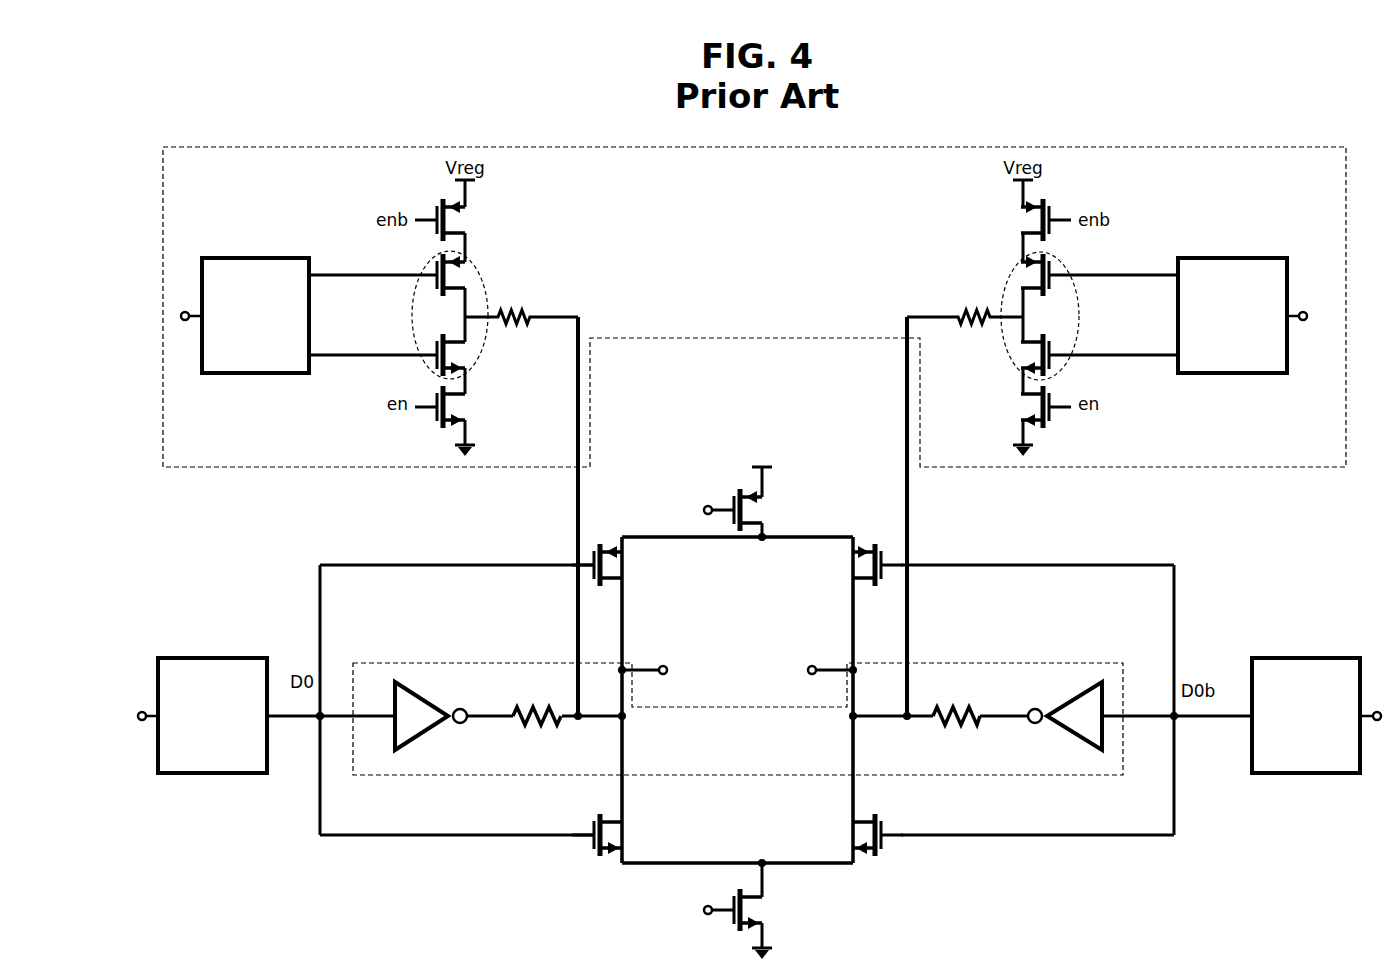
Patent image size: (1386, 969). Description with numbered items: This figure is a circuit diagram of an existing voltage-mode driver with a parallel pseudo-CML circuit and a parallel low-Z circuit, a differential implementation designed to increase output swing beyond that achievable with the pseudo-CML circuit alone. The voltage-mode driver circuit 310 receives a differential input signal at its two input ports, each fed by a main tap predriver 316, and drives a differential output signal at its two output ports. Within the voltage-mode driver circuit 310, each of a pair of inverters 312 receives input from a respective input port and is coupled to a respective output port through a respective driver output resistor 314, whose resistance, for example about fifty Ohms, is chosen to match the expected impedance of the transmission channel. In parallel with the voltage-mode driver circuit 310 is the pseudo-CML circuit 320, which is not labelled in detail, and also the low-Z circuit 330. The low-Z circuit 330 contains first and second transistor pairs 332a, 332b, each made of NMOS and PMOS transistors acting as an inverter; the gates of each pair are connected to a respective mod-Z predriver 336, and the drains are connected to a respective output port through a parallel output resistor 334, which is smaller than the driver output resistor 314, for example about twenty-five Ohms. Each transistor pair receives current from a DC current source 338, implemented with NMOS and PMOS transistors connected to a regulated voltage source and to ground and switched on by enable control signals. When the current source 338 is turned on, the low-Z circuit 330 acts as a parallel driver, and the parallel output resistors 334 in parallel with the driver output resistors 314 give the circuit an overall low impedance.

The low-Z circuit 330 is at (403, 147).
The DC current source 338 is at (490, 193).
The first transistor pair 332a is at (483, 273).
The second transistor pair 332b is at (1010, 275).
The parallel output resistor 334 is at (515, 325).
The mod-Z predriver 336 is at (744, 315).
The pseudo-CML circuit 320 is at (605, 512).
The voltage-mode driver circuit 310 is at (352, 663).
The inverter 312 is at (420, 738).
The driver output resistor 314 is at (553, 732).
The main tap predriver 316 is at (759, 715).